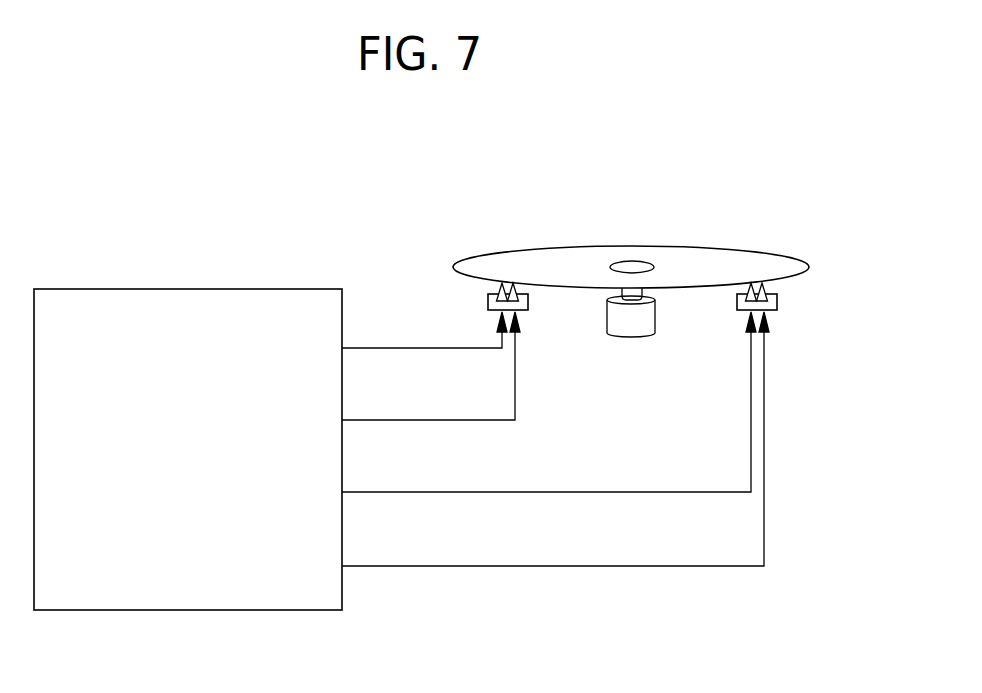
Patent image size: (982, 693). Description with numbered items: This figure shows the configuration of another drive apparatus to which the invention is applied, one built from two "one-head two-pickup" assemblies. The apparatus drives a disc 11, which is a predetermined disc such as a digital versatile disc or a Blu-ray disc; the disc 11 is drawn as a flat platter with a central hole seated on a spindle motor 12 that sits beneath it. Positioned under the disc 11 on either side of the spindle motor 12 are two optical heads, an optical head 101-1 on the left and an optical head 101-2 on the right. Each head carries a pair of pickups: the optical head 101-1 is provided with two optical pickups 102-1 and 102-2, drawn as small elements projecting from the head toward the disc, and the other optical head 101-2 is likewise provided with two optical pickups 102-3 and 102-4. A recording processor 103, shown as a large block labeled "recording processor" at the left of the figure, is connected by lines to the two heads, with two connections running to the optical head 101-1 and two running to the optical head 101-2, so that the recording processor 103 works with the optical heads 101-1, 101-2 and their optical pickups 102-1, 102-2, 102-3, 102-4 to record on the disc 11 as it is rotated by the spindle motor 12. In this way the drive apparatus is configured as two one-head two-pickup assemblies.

The disc 11 is at (630, 246).
The spindle motor 12 is at (634, 348).
The recording processor 103 is at (249, 289).
The optical head 101-1 is at (487, 320).
The optical head 101-2 is at (779, 320).
The optical pickup 102-1 is at (497, 288).
The optical pickup 102-2 is at (518, 294).
The optical pickup 102-3 is at (746, 294).
The optical pickup 102-4 is at (767, 288).